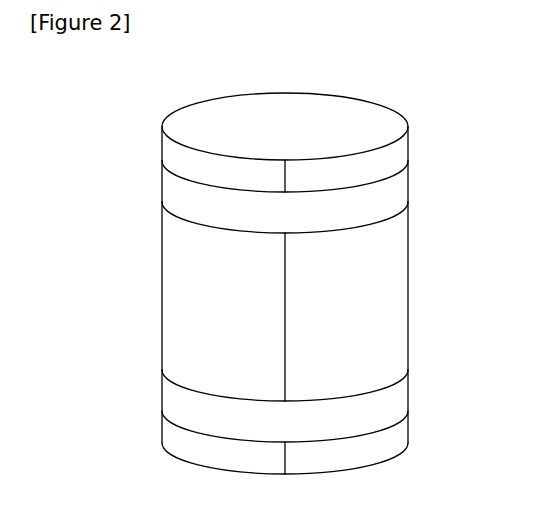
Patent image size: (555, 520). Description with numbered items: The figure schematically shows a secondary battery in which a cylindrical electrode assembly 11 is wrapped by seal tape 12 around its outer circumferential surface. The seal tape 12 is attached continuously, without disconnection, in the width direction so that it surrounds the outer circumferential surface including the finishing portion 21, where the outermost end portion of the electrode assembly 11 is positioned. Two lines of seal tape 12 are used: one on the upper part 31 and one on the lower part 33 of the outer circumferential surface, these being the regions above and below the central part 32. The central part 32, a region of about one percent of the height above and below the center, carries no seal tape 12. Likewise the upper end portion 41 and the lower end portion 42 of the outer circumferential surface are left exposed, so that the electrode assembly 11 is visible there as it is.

The electrode assembly 11 is at (388, 156).
The seal tape 12 is at (388, 193).
The finishing portion 21 is at (286, 313).
The upper part of outer circumferential surface 31 is at (157, 128).
The central part of outer circumferential surface 32 is at (157, 262).
The lower part of outer circumferential surface 33 is at (157, 305).
The upper end portion of outer circumferential surface 41 is at (163, 123).
The lower end portion of outer circumferential surface 42 is at (163, 446).